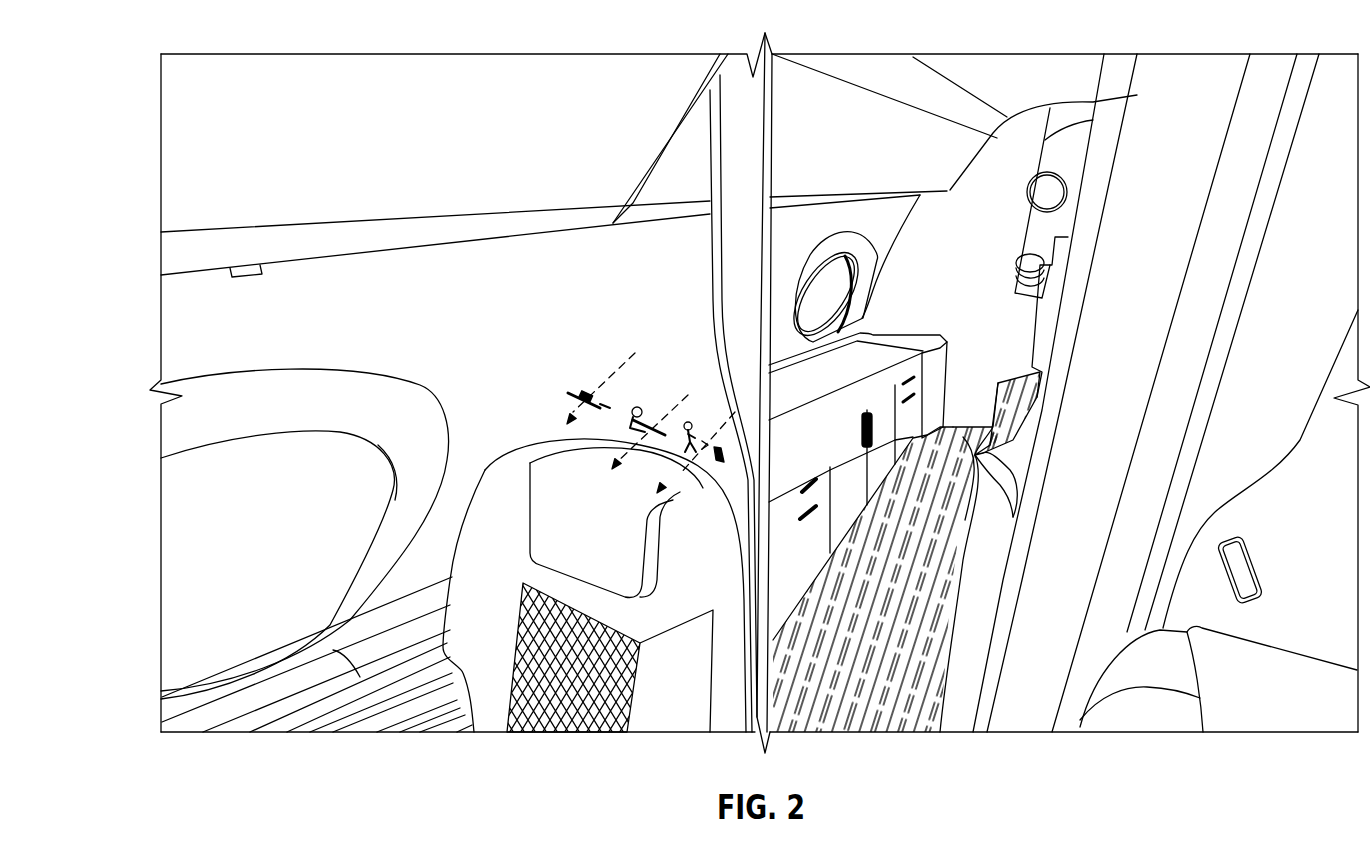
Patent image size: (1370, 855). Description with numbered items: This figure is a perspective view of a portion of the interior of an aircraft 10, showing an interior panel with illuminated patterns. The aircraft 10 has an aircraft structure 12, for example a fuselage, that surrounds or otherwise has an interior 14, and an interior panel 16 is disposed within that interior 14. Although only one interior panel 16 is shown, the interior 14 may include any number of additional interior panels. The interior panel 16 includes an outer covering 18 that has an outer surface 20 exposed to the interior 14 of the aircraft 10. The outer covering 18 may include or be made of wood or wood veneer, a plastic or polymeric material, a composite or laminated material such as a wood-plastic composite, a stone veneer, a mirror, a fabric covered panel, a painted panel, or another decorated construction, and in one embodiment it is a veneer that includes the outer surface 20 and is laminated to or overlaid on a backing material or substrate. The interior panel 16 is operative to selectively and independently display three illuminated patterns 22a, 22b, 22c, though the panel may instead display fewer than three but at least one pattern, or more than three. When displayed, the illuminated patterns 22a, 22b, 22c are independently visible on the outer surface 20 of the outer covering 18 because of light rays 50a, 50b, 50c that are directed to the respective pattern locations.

The aircraft 10 is at (1046, 30).
The aircraft structure 12 is at (1157, 30).
The interior 14 is at (1272, 30).
The interior panel 16 is at (592, 252).
The outer covering 18 is at (665, 250).
The outer surface 20 is at (577, 260).
The illuminated pattern 22a is at (535, 393).
The illuminated pattern 22b is at (650, 420).
The illuminated pattern 22c is at (713, 437).
The light rays 50a is at (573, 413).
The light rays 50b is at (633, 442).
The light rays 50c is at (673, 477).